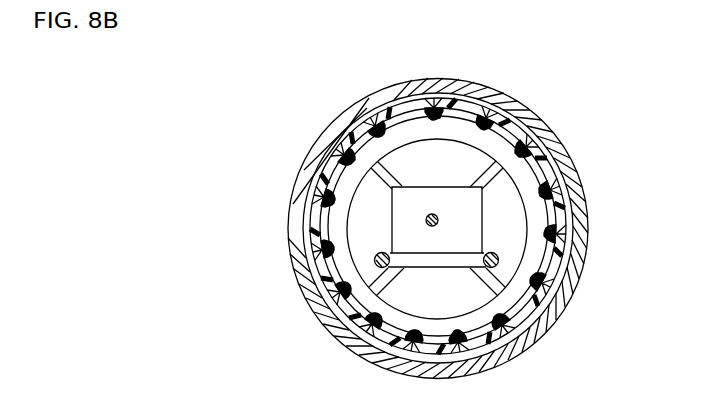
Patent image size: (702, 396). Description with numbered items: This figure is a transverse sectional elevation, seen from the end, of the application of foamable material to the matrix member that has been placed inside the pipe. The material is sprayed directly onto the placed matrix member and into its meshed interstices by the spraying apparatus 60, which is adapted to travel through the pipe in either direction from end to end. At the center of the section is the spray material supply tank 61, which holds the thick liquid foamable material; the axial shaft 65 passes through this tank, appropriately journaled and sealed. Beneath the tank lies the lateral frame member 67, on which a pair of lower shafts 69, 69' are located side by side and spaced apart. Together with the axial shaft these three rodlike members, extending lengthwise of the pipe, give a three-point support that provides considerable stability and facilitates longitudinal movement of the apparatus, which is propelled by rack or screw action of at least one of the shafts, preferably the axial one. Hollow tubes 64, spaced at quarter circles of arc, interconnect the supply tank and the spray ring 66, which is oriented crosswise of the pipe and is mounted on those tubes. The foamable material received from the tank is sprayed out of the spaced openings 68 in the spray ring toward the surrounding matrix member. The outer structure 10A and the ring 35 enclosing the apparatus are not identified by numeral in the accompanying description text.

The outer housing shell 10A is at (537, 130).
The inner ring 35 is at (462, 105).
The spaced openings 68 is at (385, 133).
The spraying apparatus 60 is at (408, 219).
The spray material supply tank 61 is at (414, 251).
The hollow tubes 64 is at (388, 172).
The spray ring 66 is at (485, 148).
The lateral frame member 67 is at (418, 268).
The axial shaft 65 is at (438, 216).
The lower shaft 69 is at (371, 247).
The lower shaft 69' is at (503, 245).